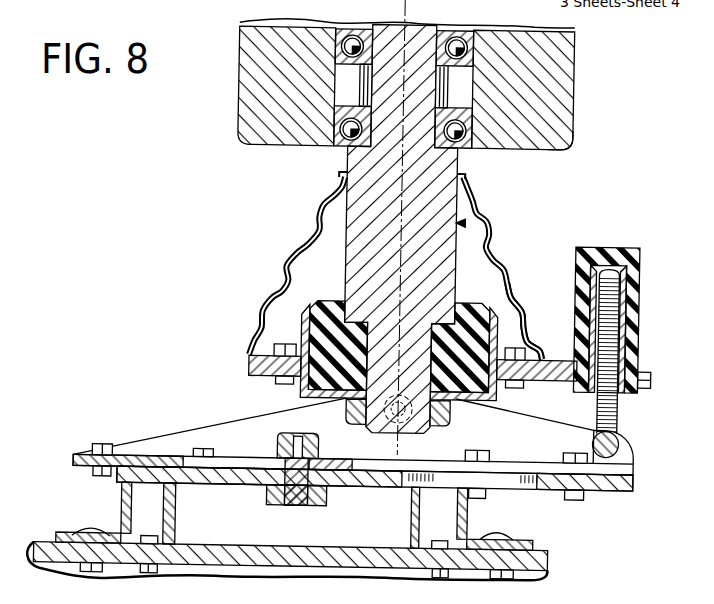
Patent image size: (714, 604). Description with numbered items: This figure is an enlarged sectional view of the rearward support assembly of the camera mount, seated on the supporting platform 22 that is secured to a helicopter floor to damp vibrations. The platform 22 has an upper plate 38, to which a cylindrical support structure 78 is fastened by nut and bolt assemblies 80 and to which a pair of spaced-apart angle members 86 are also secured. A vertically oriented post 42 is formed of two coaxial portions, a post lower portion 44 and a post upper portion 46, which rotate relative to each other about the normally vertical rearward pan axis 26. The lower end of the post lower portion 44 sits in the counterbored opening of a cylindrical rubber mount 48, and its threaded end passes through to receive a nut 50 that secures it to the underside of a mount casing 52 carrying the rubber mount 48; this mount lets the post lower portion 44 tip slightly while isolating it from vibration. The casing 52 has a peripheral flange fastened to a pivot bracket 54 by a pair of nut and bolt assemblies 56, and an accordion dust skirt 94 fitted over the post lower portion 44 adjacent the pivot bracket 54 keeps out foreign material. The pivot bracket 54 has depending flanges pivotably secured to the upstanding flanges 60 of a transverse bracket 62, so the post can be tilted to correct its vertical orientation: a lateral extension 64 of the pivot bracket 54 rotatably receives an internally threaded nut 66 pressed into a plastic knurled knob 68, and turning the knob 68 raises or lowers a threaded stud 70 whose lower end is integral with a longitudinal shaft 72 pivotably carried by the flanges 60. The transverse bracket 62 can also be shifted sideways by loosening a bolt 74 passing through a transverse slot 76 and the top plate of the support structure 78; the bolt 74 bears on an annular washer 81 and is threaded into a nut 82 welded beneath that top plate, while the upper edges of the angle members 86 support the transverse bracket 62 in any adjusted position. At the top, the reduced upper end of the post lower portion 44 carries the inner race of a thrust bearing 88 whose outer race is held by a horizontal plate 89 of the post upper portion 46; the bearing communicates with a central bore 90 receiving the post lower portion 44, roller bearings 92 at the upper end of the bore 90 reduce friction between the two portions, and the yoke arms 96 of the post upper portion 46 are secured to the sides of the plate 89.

The supporting platform 22 is at (60, 579).
The rearward pan axis 26 is at (403, 14).
The upper plate 38 is at (295, 568).
The post 42 is at (464, 221).
The post lower portion 44 is at (346, 193).
The post upper portion 46 is at (574, 68).
The rubber mount 48 is at (318, 303).
The nut 50 is at (427, 430).
The mount casing 52 is at (500, 313).
The pivot bracket 54 is at (251, 369).
The nut and bolt assemblies 56 is at (284, 387).
The upstanding flanges 60 is at (205, 430).
The transverse bracket 62 is at (101, 446).
The lateral extension 64 is at (651, 366).
The nut 66 is at (620, 308).
The knurled knob 68 is at (639, 258).
The threaded stud 70 is at (619, 397).
The shaft 72 is at (627, 436).
The bolt 74 is at (281, 447).
The transverse slot 76 is at (192, 460).
The cylindrical support structure 78 is at (180, 514).
The nut and bolt assemblies 80 is at (160, 577).
The annular washer 81 is at (343, 462).
The nut 82 is at (330, 499).
The angle members 86 is at (125, 510).
The thrust bearing 88 is at (338, 141).
The horizontal plate 89 is at (571, 138).
The central bore 90 is at (467, 142).
The roller bearings 92 is at (468, 38).
The dust skirt 94 is at (507, 260).
The yoke arms 96 is at (285, 24).